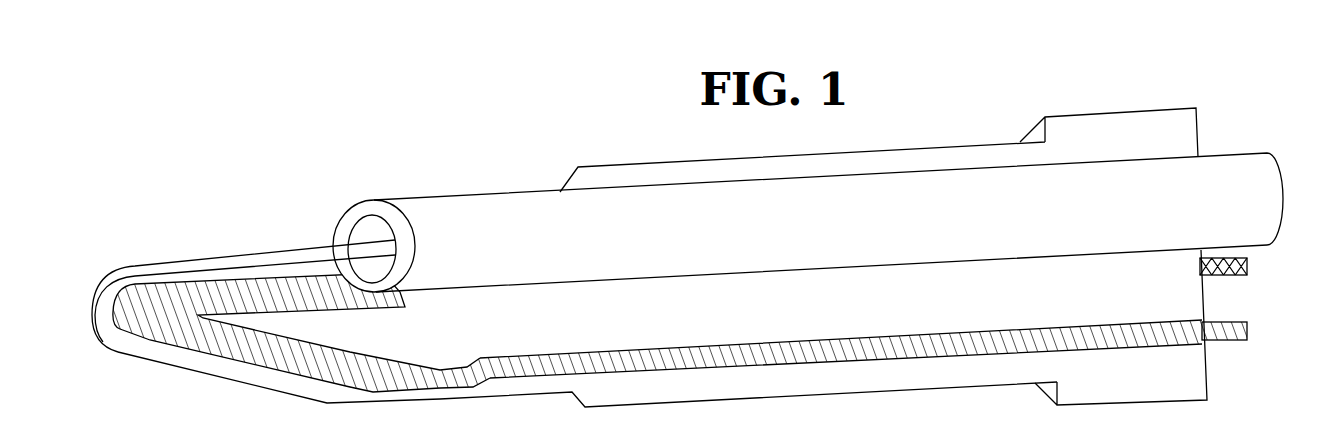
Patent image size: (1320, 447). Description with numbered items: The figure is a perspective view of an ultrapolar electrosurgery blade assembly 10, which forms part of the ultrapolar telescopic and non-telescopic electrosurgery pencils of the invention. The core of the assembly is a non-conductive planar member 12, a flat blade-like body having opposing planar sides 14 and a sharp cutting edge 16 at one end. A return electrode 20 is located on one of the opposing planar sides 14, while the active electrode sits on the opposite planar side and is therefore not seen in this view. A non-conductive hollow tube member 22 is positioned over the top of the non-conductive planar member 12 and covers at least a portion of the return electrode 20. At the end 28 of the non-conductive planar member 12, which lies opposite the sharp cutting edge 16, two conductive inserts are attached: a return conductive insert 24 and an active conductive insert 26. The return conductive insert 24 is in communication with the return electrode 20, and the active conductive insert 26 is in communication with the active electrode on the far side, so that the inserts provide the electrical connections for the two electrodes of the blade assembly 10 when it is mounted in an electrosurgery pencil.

The electrosurgery blade assembly 10 is at (482, 113).
The non-conductive planar member 12 is at (180, 262).
The opposing planar sides 14 is at (572, 328).
The sharp cutting edge 16 is at (155, 362).
The return electrode 20 is at (242, 342).
The non-conductive hollow tube member 22 is at (422, 210).
The return conductive insert 24 is at (1247, 330).
The active conductive insert 26 is at (1247, 263).
The end of non-conductive planar member opposite sharp cutting edge 28 is at (1207, 375).